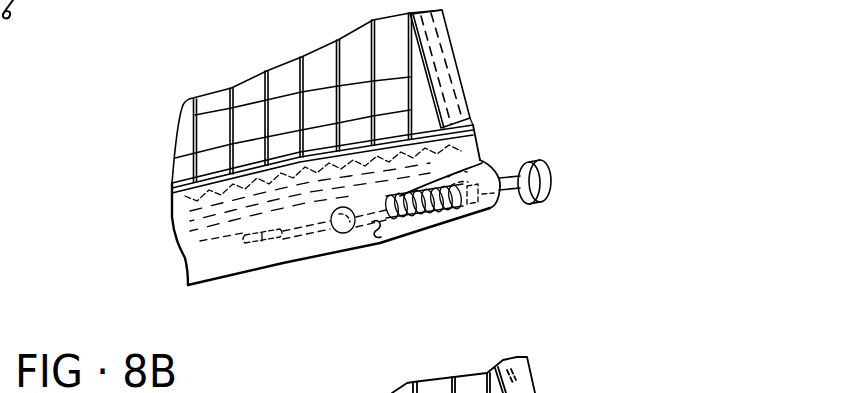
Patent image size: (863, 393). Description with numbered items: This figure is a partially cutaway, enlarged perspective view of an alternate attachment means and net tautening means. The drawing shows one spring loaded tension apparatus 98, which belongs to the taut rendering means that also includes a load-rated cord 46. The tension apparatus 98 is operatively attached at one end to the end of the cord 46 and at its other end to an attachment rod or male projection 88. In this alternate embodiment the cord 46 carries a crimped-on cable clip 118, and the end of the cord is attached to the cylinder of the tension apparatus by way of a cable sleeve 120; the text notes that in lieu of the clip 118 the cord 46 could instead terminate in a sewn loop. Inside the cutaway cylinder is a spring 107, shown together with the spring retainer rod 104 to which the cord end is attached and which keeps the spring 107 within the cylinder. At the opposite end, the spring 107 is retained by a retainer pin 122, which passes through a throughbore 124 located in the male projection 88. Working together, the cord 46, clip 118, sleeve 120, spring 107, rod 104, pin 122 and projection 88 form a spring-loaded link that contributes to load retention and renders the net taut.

The cord 46 is at (188, 284).
The male projection 88 is at (517, 165).
The tension apparatus 98 is at (451, 236).
The spring retainer rod 104 is at (518, 205).
The spring 107 is at (400, 215).
The cable clip 118 is at (272, 243).
The cable sleeve 120 is at (355, 232).
The retainer pin 122 is at (408, 216).
The throughbore 124 is at (485, 150).